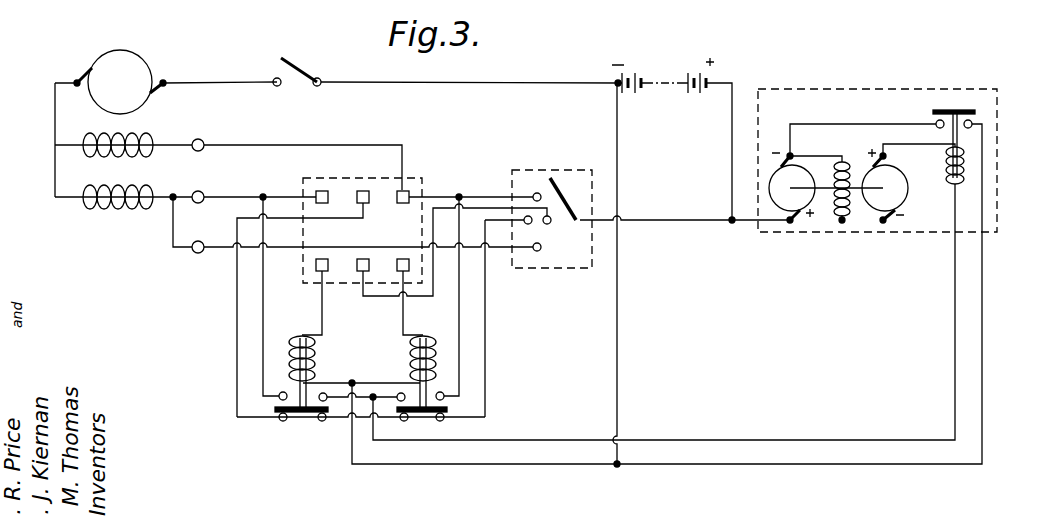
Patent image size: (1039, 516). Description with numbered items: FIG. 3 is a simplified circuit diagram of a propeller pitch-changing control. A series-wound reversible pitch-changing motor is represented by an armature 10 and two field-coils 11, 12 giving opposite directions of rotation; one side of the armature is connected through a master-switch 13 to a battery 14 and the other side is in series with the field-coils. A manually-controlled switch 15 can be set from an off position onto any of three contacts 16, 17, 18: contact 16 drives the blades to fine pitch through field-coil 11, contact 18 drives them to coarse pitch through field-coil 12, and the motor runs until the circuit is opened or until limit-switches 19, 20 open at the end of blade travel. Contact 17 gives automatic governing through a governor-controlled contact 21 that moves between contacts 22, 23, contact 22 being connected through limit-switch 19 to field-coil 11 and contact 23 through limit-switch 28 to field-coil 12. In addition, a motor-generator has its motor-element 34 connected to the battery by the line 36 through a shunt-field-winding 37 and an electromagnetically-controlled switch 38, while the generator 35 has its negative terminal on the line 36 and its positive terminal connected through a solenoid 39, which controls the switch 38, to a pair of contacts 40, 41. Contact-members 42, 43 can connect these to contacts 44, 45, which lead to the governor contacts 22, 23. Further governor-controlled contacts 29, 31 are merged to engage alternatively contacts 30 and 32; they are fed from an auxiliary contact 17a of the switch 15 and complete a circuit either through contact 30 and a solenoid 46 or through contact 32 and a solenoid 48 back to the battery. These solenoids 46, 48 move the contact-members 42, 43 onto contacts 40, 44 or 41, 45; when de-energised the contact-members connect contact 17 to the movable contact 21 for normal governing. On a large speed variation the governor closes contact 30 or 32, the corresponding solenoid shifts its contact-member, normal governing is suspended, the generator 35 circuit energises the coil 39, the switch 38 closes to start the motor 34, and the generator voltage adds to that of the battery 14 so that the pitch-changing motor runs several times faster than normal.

The armature 10 is at (130, 62).
The field-coil 11 is at (128, 134).
The field-coil 12 is at (108, 206).
The master-switch 13 is at (300, 63).
The battery 14 is at (632, 85).
The manually-controlled switch 15 is at (556, 178).
The contact 16 is at (537, 193).
The contact 17 is at (548, 224).
The auxiliary contact 17a is at (532, 224).
The contact 18 is at (535, 251).
The limit-switch 19 is at (204, 139).
The limit-switch 20 is at (197, 253).
The governor-controlled contact 21 is at (363, 189).
The contact 22 is at (409, 192).
The contact 23 is at (319, 190).
The limit-switch 28 is at (203, 191).
The governor-controlled contact 29 is at (356, 248).
The contact 30 is at (316, 265).
The governor-controlled contact 31 is at (360, 259).
The contact 32 is at (403, 258).
The motor-element 34 is at (782, 200).
The generator 35 is at (903, 185).
The line 36 is at (750, 232).
The shunt-field-winding 37 is at (846, 210).
The electromagnetically-controlled switch 38 is at (940, 110).
The solenoid 39 is at (951, 168).
The contact 40 is at (400, 393).
The contact 41 is at (325, 393).
The contact-member 42 is at (420, 410).
The contact-member 43 is at (303, 410).
The contact 44 is at (445, 395).
The contact 45 is at (279, 395).
The solenoid 46 is at (298, 345).
The solenoid 48 is at (425, 345).